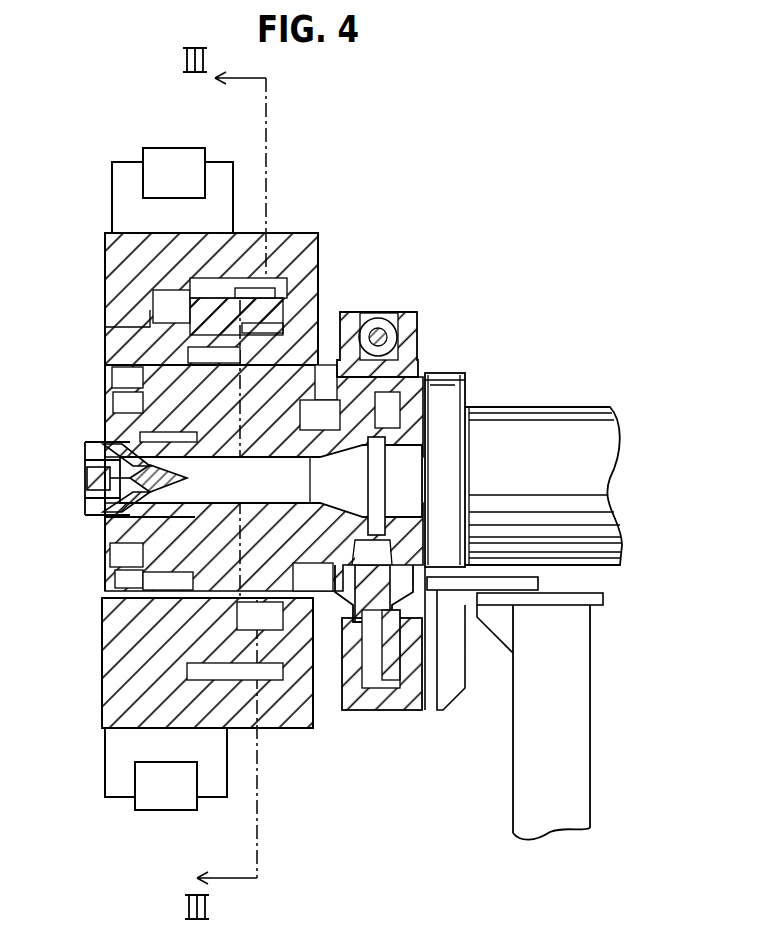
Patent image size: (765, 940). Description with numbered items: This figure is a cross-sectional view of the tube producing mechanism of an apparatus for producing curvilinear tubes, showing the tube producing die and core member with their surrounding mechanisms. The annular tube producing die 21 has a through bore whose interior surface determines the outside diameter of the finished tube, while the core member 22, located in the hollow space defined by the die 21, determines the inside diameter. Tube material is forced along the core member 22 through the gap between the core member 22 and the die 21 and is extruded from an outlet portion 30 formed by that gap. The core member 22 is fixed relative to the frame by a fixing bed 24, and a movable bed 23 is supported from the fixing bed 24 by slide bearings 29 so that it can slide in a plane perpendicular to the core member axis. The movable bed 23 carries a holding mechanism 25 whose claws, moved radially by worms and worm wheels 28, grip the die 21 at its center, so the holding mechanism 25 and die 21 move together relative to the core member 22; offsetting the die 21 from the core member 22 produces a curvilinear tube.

The tube producing die 21 is at (95, 450).
The core member 22 is at (87, 485).
The movable bed 23 is at (125, 285).
The fixing bed 24 is at (223, 172).
The holding mechanism 25 is at (150, 312).
The worm wheel 28 is at (263, 290).
The slide bearing 29 is at (175, 165).
The outlet portion 30 is at (90, 498).